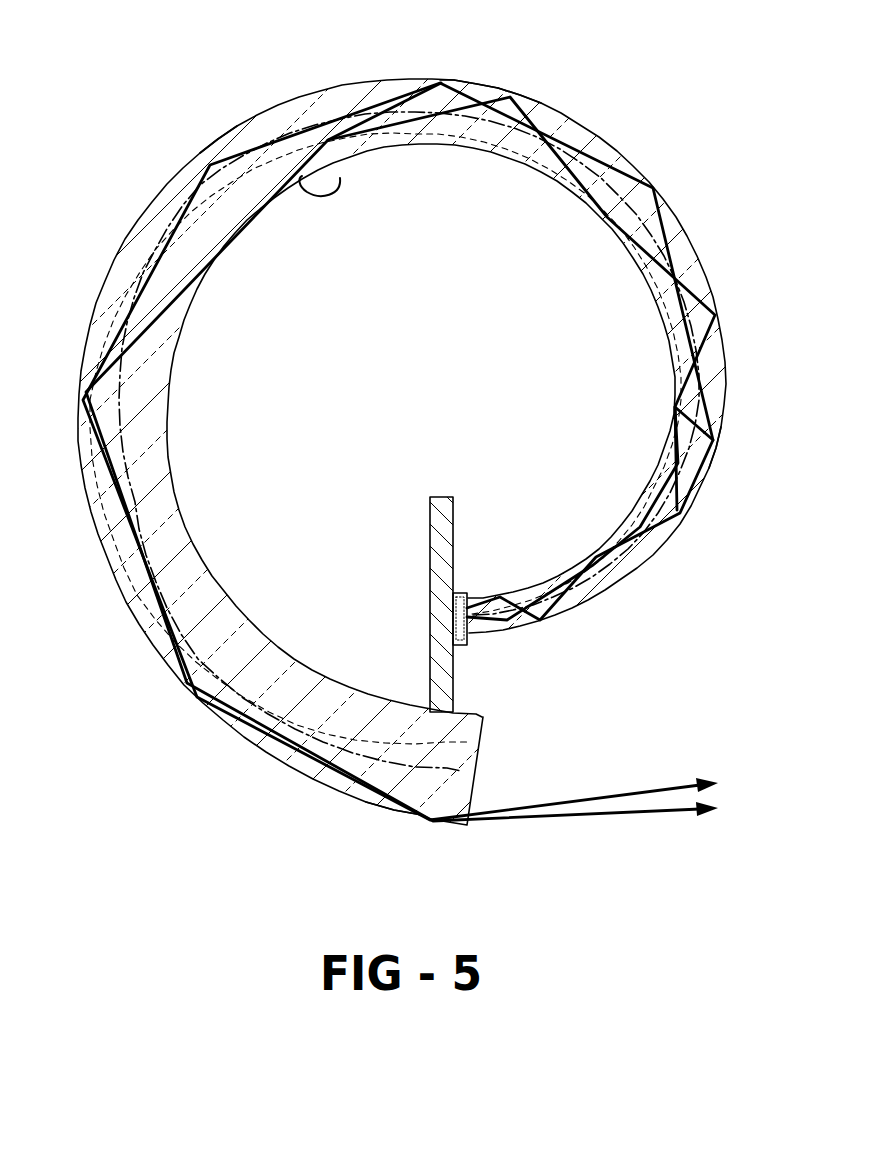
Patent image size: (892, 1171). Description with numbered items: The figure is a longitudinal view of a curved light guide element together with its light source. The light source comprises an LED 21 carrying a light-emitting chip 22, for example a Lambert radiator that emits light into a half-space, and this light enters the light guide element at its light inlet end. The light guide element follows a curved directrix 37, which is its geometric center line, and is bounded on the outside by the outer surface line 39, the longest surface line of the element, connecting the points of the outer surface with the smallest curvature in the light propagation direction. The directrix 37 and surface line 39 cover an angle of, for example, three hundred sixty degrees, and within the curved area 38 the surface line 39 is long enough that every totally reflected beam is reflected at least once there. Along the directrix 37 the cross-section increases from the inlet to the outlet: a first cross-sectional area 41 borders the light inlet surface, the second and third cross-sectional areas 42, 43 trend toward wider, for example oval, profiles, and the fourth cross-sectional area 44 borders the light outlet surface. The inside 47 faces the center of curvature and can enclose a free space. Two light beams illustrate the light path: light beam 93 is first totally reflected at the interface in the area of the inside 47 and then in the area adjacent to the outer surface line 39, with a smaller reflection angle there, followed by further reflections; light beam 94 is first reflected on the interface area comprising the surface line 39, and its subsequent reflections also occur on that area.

The LED 21 is at (469, 660).
The light-emitting chip 22 is at (477, 627).
The directrix 37 is at (170, 267).
The curved area 38 is at (467, 74).
The outer surface line 39 is at (360, 80).
The first cross-sectional area 41 is at (728, 460).
The second cross-sectional area 42 is at (515, 86).
The third cross-sectional area 43 is at (217, 143).
The fourth cross-sectional area 44 is at (389, 818).
The inside 47 is at (340, 178).
The light beam 93 is at (705, 293).
The light beam 94 is at (703, 337).